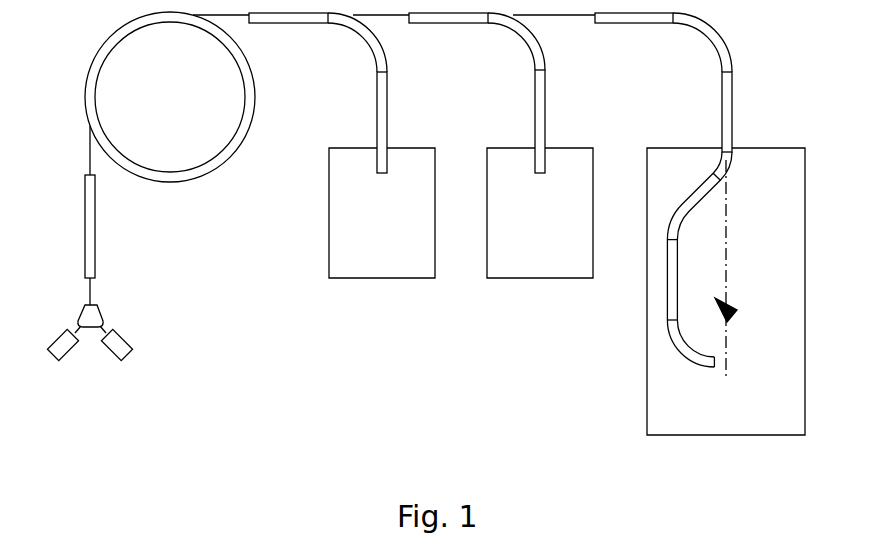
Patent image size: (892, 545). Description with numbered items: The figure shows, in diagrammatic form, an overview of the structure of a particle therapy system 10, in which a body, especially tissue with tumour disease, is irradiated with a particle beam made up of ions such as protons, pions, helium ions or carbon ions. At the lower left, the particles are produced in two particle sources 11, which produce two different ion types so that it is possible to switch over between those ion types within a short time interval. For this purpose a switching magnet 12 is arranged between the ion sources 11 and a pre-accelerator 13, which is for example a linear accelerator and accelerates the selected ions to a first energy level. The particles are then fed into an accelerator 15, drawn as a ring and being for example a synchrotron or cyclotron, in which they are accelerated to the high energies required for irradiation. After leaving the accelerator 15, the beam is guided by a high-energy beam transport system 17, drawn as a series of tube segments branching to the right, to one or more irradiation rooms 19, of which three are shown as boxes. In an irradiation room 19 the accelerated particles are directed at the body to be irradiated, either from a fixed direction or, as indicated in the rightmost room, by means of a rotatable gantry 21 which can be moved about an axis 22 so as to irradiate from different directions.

The particle therapy system 10 is at (243, 443).
The particle source 11 is at (63, 348).
The switching magnet 12 is at (98, 315).
The pre-accelerator 13 is at (92, 243).
The accelerator 15 is at (224, 160).
The high-energy beam transport system 17 is at (308, 22).
The irradiation room 19 is at (362, 279).
The rotatable gantry 21 is at (732, 314).
The axis 22 is at (727, 376).